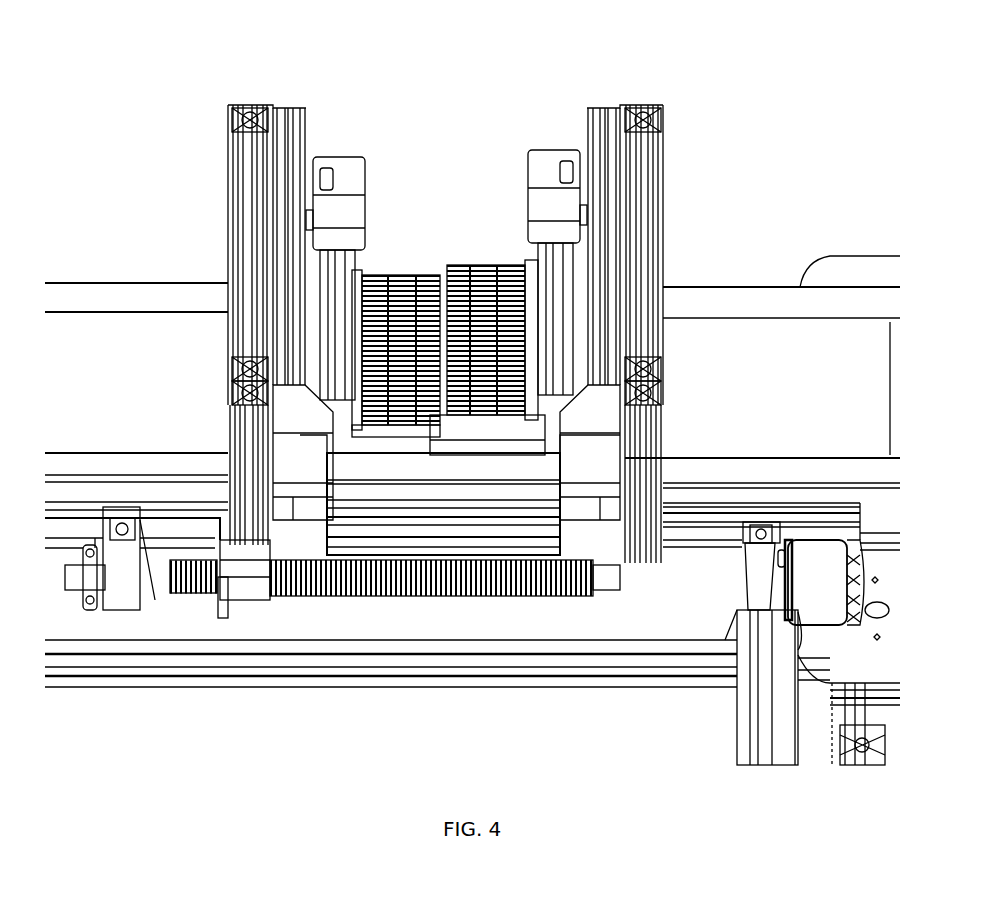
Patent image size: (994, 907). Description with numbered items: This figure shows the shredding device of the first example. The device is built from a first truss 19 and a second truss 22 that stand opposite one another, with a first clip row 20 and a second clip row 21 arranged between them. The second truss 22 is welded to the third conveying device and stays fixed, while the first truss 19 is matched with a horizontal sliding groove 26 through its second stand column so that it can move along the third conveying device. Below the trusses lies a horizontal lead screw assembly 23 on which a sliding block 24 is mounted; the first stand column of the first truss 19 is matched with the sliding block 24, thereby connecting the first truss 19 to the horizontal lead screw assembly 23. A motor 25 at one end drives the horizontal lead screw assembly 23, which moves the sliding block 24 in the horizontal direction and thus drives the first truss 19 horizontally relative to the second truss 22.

The first truss 19 is at (250, 120).
The first clip row 20 is at (382, 277).
The second clip row 21 is at (505, 268).
The second truss 22 is at (608, 160).
The horizontal lead screw assembly 23 is at (335, 588).
The sliding block 24 is at (250, 567).
The motor 25 is at (807, 578).
The horizontal sliding groove 26 is at (412, 540).